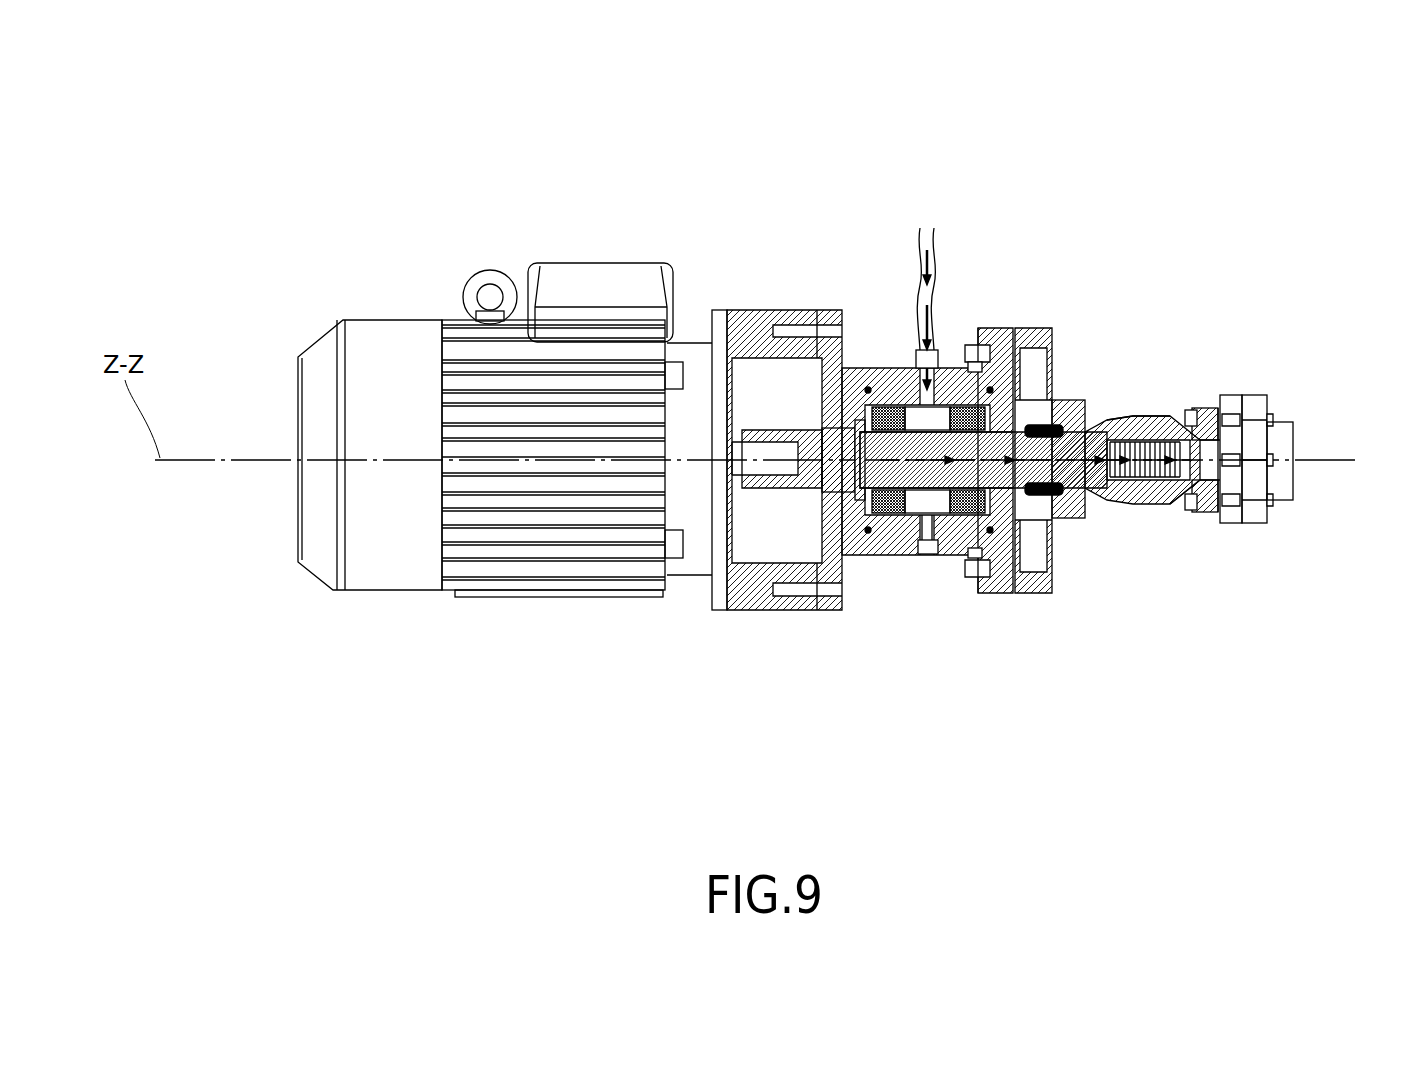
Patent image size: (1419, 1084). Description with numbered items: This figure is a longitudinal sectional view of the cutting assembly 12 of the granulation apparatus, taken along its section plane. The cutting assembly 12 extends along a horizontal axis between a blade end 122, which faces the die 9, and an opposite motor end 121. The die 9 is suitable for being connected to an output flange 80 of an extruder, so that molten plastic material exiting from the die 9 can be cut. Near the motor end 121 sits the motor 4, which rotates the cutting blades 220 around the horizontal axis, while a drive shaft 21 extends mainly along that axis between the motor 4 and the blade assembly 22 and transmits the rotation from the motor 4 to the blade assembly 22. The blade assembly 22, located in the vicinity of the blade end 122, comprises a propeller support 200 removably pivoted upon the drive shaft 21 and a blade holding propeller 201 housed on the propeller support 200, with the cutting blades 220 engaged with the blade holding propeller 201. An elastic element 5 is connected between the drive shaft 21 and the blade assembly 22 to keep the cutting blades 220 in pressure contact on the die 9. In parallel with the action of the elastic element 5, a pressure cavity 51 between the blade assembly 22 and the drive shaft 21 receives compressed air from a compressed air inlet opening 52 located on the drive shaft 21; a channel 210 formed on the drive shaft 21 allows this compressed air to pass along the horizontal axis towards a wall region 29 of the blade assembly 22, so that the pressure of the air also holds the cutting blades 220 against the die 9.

The motor 4 is at (502, 540).
The elastic element 5 is at (1127, 428).
The die 9 is at (1232, 402).
The cutting assembly 12 is at (964, 236).
The drive shaft 21 is at (956, 546).
The blade assembly 22 is at (1153, 508).
The shaft end 29 is at (1160, 436).
The pressure cavity 51 is at (1175, 495).
The compressed air inlet opening 52 is at (920, 548).
The output flange 80 is at (1280, 434).
The motor end 121 is at (298, 597).
The blade end 122 is at (1272, 563).
The propeller support 200 is at (1142, 502).
The blade holding propeller 201 is at (1195, 418).
The channel 210 is at (1092, 426).
The cutting blades 220 is at (1213, 418).